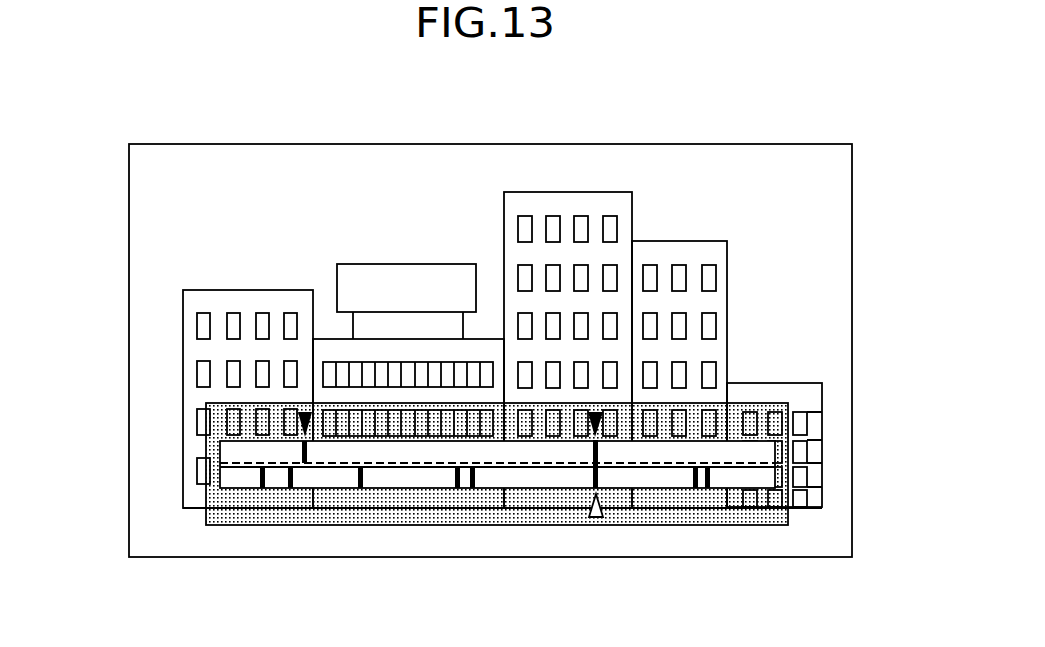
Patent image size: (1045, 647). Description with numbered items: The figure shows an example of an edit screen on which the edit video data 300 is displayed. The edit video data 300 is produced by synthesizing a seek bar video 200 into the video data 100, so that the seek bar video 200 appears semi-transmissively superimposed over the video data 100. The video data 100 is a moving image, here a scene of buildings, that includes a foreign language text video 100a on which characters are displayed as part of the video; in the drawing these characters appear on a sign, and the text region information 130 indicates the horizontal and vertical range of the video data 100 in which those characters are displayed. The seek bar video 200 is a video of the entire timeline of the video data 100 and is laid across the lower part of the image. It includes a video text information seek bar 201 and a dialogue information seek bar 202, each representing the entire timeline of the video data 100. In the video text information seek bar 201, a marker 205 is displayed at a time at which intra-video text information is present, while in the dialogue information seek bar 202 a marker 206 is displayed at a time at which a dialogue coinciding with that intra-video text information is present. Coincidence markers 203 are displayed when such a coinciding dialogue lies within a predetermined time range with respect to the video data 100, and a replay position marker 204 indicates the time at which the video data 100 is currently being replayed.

The video data 100 is at (707, 165).
The foreign language text video 100a is at (452, 273).
The text region information 130 is at (390, 252).
The edit video data 300 is at (820, 143).
The seek bar video 200 is at (217, 519).
The video text information seek bar 201 is at (228, 482).
The dialogue information seek bar 202 is at (228, 453).
The coincidence markers 203 is at (305, 412).
The replay position marker 204 is at (595, 522).
The marker 205 is at (600, 476).
The marker 206 is at (592, 452).